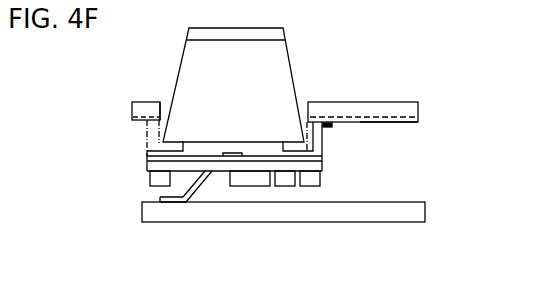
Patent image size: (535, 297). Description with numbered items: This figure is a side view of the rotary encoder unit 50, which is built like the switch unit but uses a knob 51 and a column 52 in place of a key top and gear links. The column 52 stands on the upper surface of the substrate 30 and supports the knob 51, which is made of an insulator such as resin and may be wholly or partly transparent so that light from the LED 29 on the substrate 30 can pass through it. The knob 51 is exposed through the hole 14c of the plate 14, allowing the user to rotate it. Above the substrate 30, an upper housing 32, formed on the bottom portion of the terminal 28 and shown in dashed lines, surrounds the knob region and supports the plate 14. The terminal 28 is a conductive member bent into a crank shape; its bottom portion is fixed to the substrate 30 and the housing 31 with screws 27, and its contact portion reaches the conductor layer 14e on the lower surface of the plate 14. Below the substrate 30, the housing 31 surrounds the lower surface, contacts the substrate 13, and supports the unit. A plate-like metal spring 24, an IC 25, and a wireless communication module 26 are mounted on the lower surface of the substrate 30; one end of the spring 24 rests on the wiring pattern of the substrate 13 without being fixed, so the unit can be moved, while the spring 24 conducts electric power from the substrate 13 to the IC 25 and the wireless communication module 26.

The substrate 13 is at (158, 216).
The plate 14 is at (398, 107).
The hole 14c is at (160, 110).
The conductor layer 14e is at (399, 124).
The spring 24 is at (180, 193).
The IC 25 is at (252, 182).
The wireless communication module 26 is at (285, 180).
The screw 27 is at (158, 182).
The terminal 28 is at (331, 127).
The LED 29 is at (232, 157).
The substrate 30 is at (148, 161).
The housing 31 is at (322, 194).
The housing 32 is at (143, 135).
The rotary encoder unit 50 is at (340, 73).
The knob 51 is at (283, 48).
The column 52 is at (146, 150).